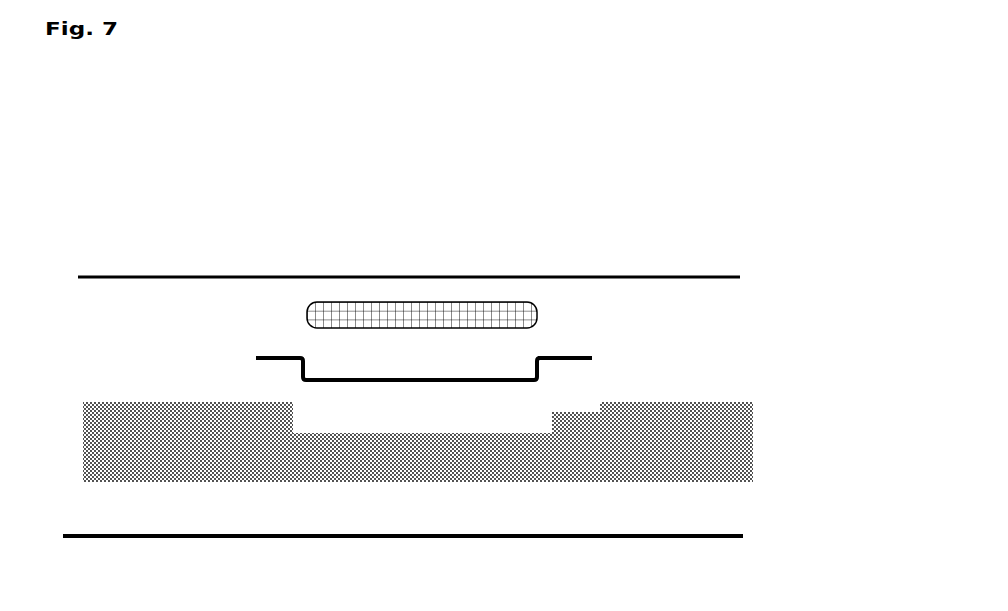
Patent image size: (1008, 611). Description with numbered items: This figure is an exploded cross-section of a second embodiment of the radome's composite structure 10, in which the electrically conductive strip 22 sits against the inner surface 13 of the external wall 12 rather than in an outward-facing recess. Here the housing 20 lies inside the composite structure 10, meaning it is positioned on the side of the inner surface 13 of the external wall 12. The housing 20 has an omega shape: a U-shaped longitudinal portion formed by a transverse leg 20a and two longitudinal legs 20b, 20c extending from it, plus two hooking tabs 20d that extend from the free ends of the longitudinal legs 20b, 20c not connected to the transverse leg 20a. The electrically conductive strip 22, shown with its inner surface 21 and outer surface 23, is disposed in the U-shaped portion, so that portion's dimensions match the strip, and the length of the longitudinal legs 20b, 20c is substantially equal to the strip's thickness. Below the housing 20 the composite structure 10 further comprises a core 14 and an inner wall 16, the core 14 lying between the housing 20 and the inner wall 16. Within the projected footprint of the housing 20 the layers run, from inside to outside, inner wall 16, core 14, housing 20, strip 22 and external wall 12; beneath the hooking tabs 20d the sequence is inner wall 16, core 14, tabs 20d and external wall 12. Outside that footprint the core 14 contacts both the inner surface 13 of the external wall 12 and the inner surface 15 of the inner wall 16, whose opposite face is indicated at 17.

The composite structure 10 is at (119, 185).
The external wall 12 is at (783, 277).
The inner surface 13 is at (119, 279).
The core 14 is at (790, 437).
The inner surface 15 is at (700, 534).
The inner wall 16 is at (790, 537).
The lower surface of lower cover layer 17 is at (78, 540).
The housing 20 is at (536, 378).
The transverse leg 20a is at (440, 382).
The longitudinal leg 20b is at (544, 376).
The longitudinal leg 20c is at (301, 373).
The hooking tab 20d is at (268, 356).
The inner surface 21 is at (312, 329).
The electrically conductive strip 22 is at (541, 318).
The outer surface 23 is at (458, 300).